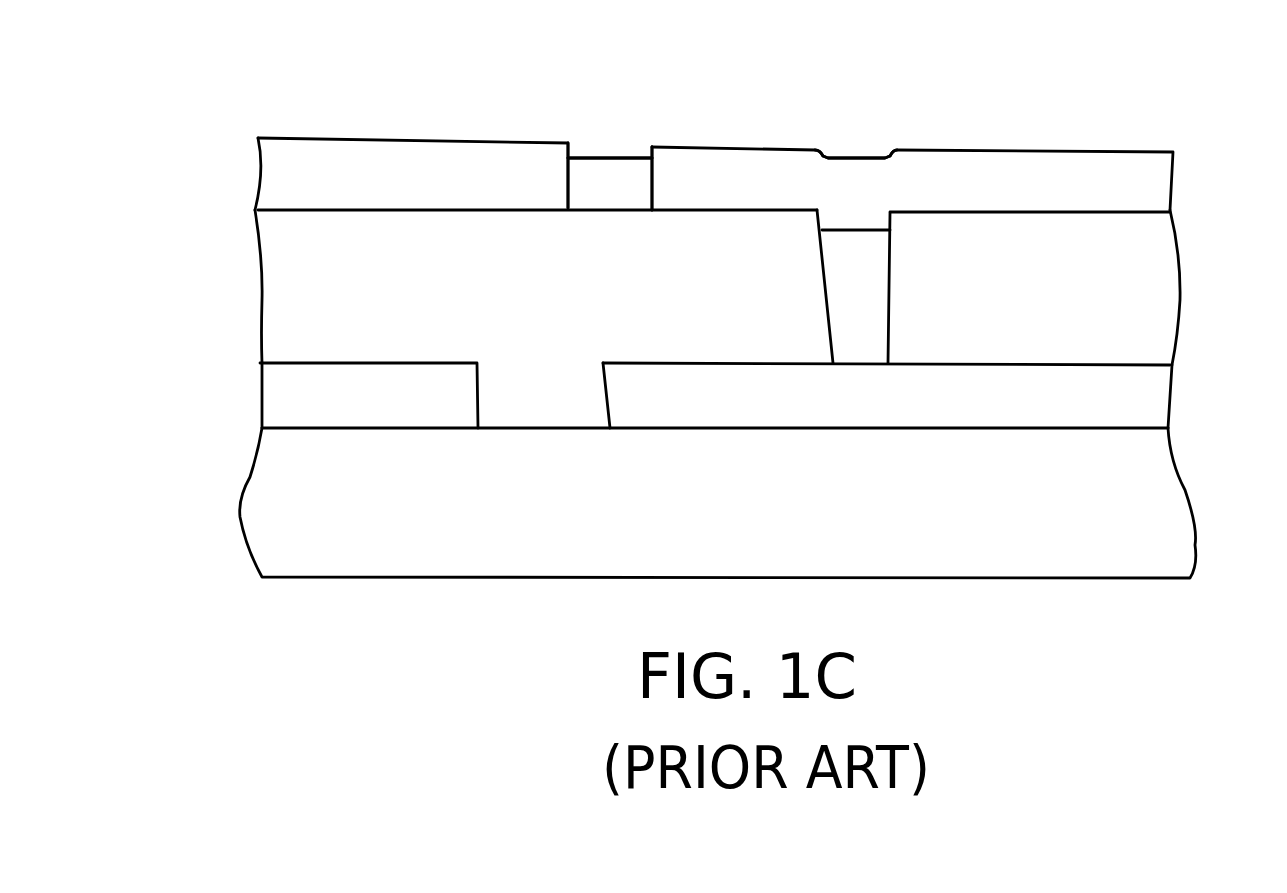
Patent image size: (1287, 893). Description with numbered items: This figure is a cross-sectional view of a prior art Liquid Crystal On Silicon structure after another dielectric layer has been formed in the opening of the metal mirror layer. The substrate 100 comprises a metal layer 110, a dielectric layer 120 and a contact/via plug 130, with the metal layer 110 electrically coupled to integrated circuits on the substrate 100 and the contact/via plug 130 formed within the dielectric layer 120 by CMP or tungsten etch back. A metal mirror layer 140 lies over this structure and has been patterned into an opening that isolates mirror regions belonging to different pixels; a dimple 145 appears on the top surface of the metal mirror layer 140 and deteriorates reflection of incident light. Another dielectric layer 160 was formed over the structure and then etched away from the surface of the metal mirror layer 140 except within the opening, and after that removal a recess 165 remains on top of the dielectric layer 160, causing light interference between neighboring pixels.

The substrate 100 is at (1165, 515).
The metal layer 110 is at (285, 404).
The dielectric layer 120 is at (1152, 280).
The contact/via plug 130 is at (877, 292).
The metal mirror layer 140 is at (283, 175).
The dimple 145 is at (860, 137).
The dielectric layer 160 is at (605, 177).
The recess 165 is at (634, 84).